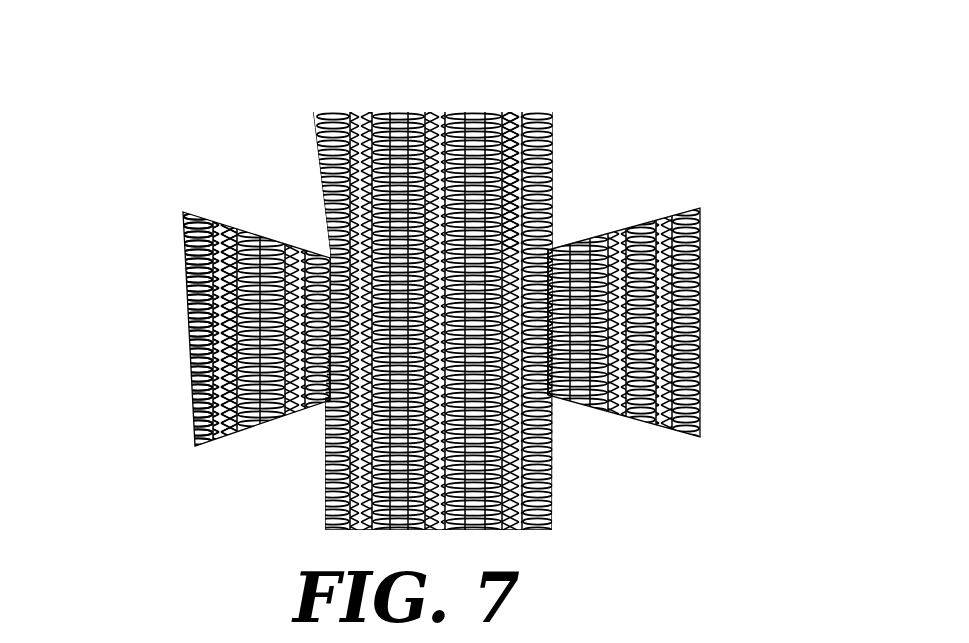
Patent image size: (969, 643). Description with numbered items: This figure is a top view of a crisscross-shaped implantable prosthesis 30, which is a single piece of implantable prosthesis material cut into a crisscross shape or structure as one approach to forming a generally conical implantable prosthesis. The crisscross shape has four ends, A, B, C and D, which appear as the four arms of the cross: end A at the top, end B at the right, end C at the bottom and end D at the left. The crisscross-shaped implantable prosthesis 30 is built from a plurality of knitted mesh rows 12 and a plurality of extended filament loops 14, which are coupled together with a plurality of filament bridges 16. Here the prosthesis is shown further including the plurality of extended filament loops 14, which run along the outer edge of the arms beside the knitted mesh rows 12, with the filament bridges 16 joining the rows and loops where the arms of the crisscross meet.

The crisscross-shaped implantable prosthesis 30 is at (416, 281).
The knitted mesh rows 12 is at (514, 110).
The extended filament loops 14 is at (183, 248).
The filament bridges 16 is at (572, 247).
The end A is at (433, 96).
The end B is at (724, 304).
The end C is at (562, 505).
The end D is at (157, 338).